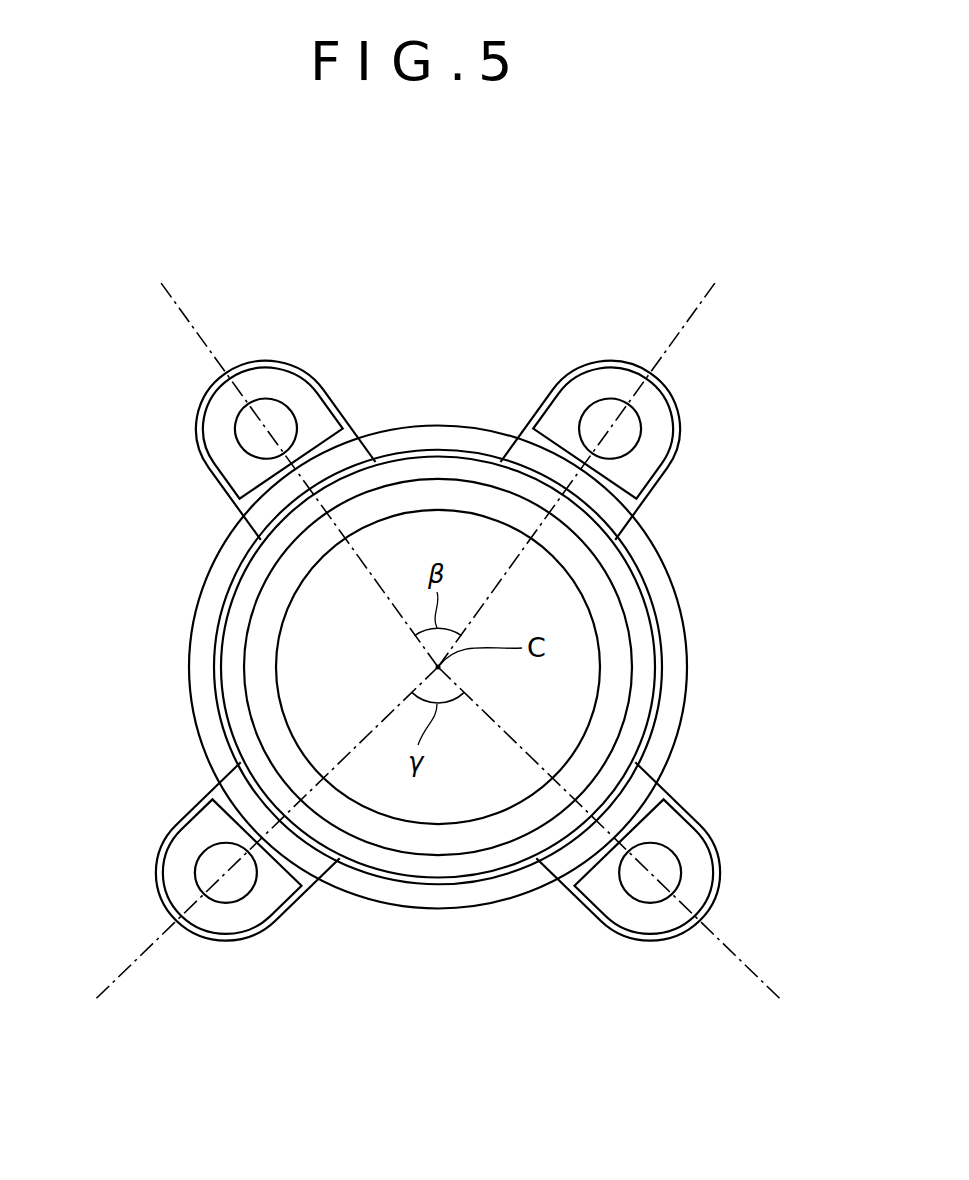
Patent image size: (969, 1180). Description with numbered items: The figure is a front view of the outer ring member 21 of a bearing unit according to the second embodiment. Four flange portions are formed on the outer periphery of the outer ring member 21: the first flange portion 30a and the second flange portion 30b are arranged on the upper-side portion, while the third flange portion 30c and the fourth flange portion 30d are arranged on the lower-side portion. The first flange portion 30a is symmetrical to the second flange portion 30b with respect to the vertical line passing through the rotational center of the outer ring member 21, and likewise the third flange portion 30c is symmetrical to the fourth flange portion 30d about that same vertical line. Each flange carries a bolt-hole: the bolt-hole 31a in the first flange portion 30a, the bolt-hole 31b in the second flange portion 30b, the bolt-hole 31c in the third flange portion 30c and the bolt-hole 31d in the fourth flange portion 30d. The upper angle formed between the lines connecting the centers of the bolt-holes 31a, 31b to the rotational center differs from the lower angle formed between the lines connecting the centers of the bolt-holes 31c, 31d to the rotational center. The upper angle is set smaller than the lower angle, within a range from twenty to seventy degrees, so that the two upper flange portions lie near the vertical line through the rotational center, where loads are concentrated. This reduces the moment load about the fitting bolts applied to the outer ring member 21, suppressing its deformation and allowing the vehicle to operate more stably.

The outer ring member 21 is at (428, 372).
The first flange portion 30a is at (290, 390).
The second flange portion 30b is at (586, 388).
The third flange portion 30c is at (623, 905).
The fourth flange portion 30d is at (257, 908).
The bolt-hole 31a is at (247, 440).
The bolt-hole 31b is at (623, 437).
The bolt-hole 31c is at (670, 868).
The bolt-hole 31d is at (207, 870).